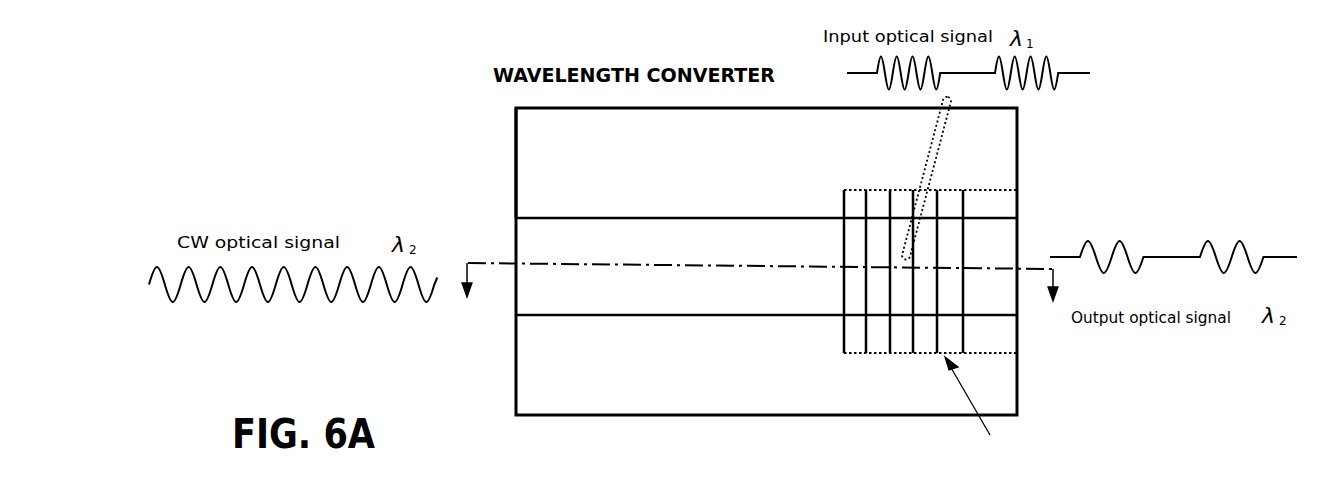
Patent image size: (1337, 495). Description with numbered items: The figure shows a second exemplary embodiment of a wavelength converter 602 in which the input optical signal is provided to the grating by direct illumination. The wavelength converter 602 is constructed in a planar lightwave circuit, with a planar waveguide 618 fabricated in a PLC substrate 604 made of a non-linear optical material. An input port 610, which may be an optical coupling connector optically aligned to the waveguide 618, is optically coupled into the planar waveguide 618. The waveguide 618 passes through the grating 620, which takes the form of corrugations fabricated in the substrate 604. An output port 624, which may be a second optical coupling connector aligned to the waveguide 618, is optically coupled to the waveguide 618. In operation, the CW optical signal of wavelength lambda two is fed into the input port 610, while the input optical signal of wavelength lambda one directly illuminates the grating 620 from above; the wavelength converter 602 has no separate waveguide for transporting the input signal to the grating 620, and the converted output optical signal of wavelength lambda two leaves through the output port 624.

The wavelength converter 602 is at (1136, 147).
The PLC substrate 604 is at (543, 164).
The input port 610 is at (503, 248).
The planar waveguide 618 is at (760, 248).
The grating 620 is at (858, 356).
The output port 624 is at (1025, 248).